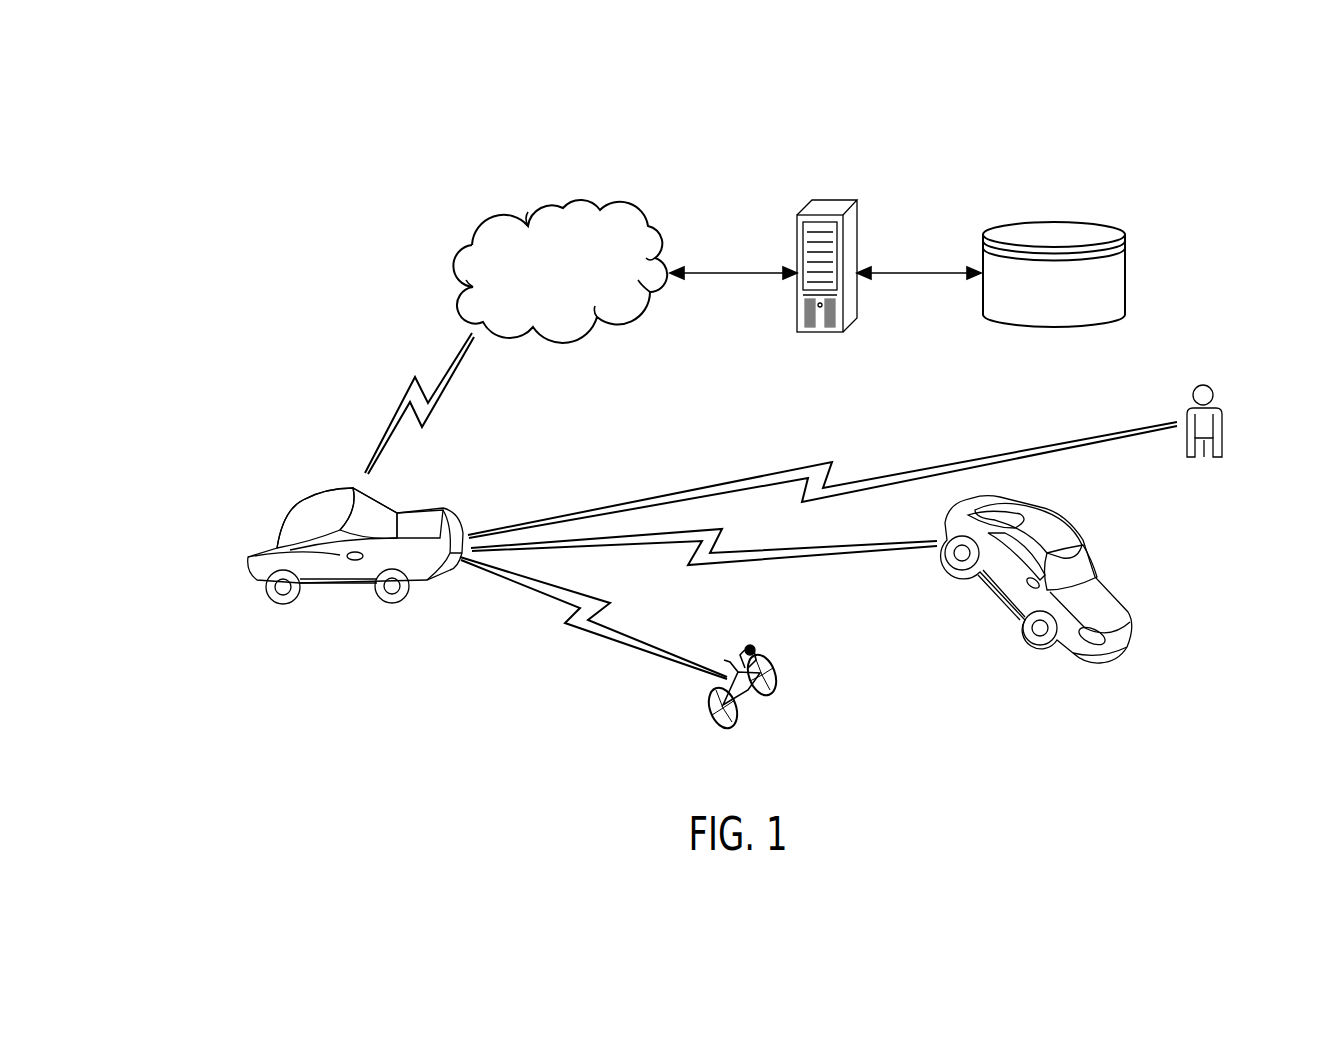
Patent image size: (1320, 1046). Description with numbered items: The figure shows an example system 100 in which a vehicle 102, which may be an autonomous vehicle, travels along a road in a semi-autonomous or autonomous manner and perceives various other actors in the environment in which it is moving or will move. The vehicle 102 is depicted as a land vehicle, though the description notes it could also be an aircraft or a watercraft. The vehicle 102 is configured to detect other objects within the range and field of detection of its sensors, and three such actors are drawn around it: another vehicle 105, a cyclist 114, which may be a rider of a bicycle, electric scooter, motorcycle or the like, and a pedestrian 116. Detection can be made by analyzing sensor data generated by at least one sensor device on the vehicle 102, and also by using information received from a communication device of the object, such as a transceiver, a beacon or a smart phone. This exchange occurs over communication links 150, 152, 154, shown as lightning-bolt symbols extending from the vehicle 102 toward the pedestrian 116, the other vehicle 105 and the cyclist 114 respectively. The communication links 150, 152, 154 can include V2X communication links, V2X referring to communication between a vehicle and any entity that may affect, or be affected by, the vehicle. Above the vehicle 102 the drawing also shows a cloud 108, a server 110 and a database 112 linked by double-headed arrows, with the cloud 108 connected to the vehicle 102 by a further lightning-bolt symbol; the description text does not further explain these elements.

The system 100 is at (258, 187).
The vehicle 102 is at (345, 590).
The another vehicle 105 is at (1036, 649).
The network cloud 108 is at (494, 215).
The server 110 is at (835, 199).
The database 112 is at (990, 327).
The cyclist 114 is at (773, 692).
The pedestrian 116 is at (1202, 458).
The communication link 150 is at (735, 483).
The communication link 152 is at (834, 553).
The communication link 154 is at (613, 640).